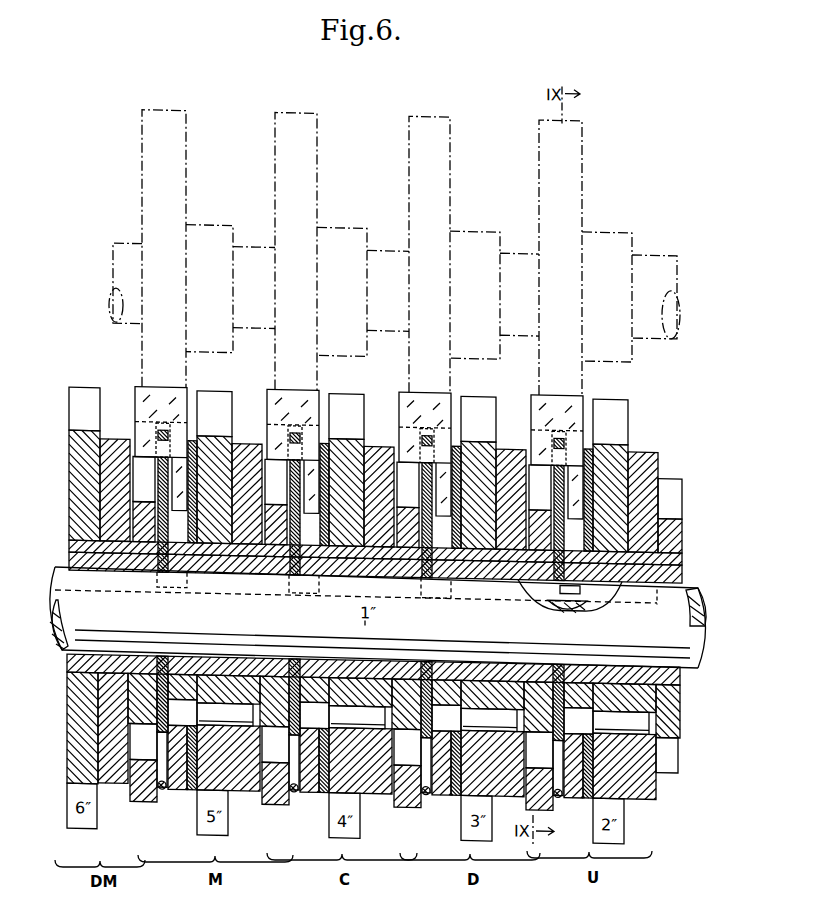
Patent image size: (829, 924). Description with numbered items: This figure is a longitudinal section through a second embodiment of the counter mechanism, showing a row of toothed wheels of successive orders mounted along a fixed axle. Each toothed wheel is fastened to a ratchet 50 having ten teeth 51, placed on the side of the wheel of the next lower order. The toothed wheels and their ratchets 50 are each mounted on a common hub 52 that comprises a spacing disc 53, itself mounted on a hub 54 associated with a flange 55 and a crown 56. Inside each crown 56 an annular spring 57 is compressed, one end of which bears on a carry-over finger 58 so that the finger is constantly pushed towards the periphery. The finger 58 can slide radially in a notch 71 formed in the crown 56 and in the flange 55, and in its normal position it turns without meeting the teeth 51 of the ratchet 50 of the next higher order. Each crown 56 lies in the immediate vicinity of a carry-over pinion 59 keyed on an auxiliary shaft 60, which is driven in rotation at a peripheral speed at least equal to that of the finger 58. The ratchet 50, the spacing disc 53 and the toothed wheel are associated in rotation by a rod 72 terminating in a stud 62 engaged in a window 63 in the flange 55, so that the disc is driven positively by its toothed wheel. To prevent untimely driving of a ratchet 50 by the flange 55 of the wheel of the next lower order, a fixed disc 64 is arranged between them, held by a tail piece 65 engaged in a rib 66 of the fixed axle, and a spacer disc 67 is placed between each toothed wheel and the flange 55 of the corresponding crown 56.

The ratchet 50 is at (279, 656).
The teeth 51 is at (258, 778).
The common hub 52 is at (87, 546).
The spacing disc 53 is at (375, 782).
The hub 54 is at (224, 652).
The flange 55 is at (432, 790).
The crown 56 is at (137, 775).
The annular spring 57 is at (163, 789).
The carry-over finger 58 is at (306, 388).
The carry-over pinion 59 is at (450, 196).
The auxiliary shaft 60 is at (636, 246).
The stud 62 is at (380, 736).
The window 63 is at (313, 653).
The fixed disc 64 is at (283, 505).
The tail piece 65 is at (428, 586).
The rib 66 is at (600, 590).
The spacer disc 67 is at (457, 445).
The notch 71 is at (314, 558).
The rod 72 is at (423, 718).